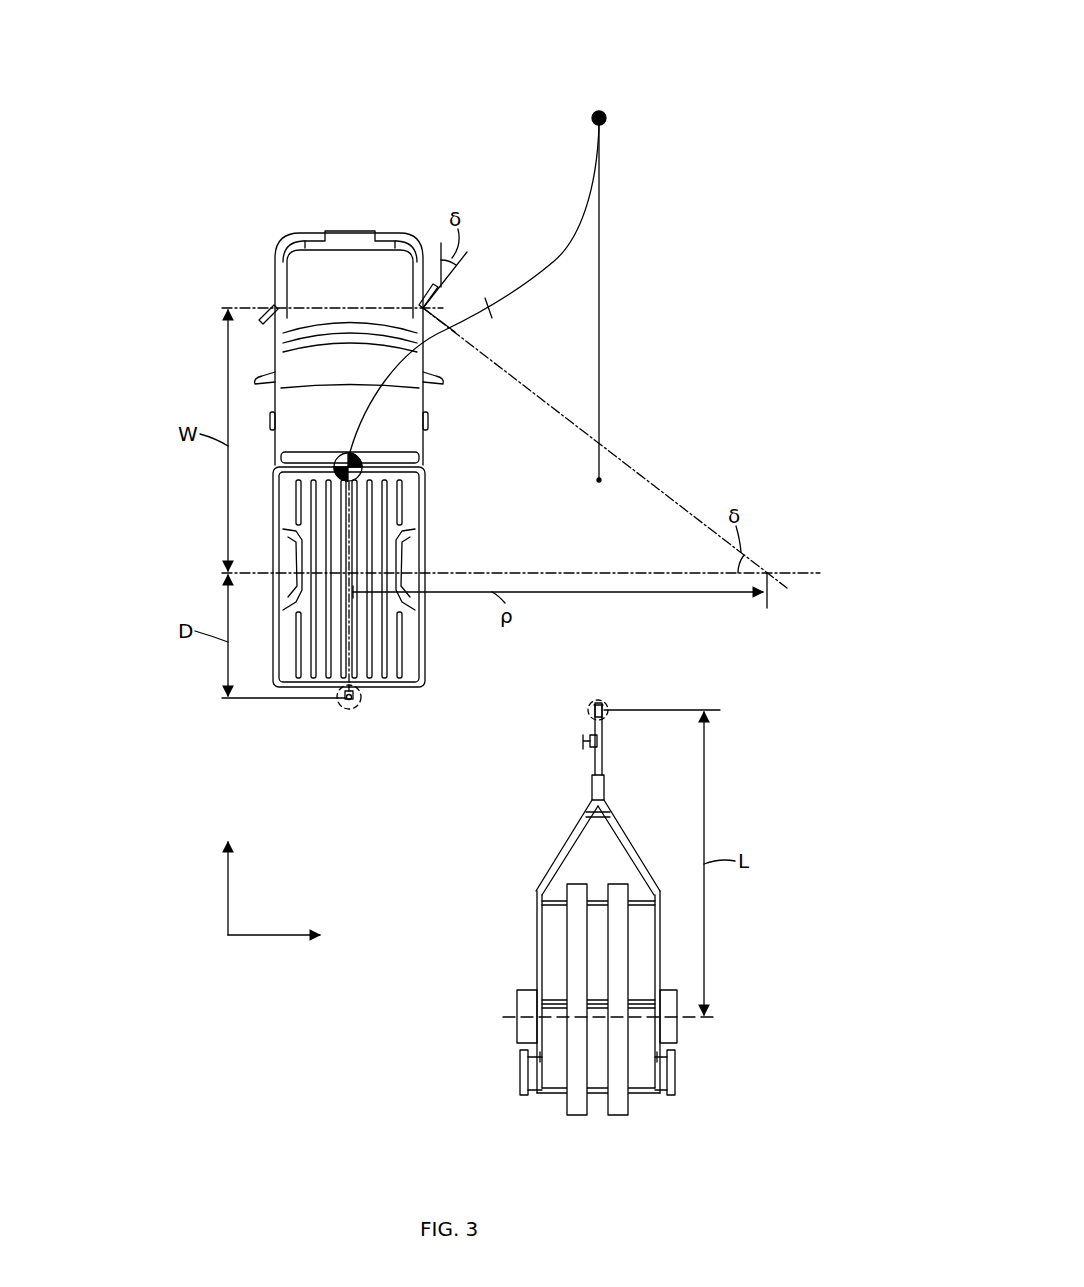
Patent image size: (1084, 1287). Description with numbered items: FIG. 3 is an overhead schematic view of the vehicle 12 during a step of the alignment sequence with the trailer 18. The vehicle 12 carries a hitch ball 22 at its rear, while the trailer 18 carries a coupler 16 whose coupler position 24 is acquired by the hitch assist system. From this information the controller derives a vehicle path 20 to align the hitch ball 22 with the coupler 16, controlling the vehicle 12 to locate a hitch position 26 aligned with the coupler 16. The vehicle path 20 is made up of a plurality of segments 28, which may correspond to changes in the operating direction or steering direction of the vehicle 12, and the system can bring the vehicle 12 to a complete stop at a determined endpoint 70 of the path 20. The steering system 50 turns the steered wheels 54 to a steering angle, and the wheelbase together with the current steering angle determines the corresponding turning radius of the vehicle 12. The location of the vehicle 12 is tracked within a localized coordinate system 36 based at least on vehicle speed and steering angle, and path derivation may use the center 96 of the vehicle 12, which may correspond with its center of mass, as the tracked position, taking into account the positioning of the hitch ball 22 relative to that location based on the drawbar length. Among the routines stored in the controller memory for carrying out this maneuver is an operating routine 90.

The vehicle 12 is at (255, 236).
The coupler 16 is at (606, 714).
The trailer 18 is at (533, 937).
The vehicle path 20 is at (678, 68).
The hitch ball 22 is at (343, 700).
The coupler position 24 is at (606, 703).
The hitch position 26 is at (361, 705).
The segments 28 is at (604, 330).
The localized coordinate system 36 is at (278, 958).
The steering system 50 is at (447, 340).
The steered wheels 54 is at (432, 286).
The endpoint 70 is at (599, 480).
The operating routine 90 is at (594, 113).
The center 96 is at (334, 474).